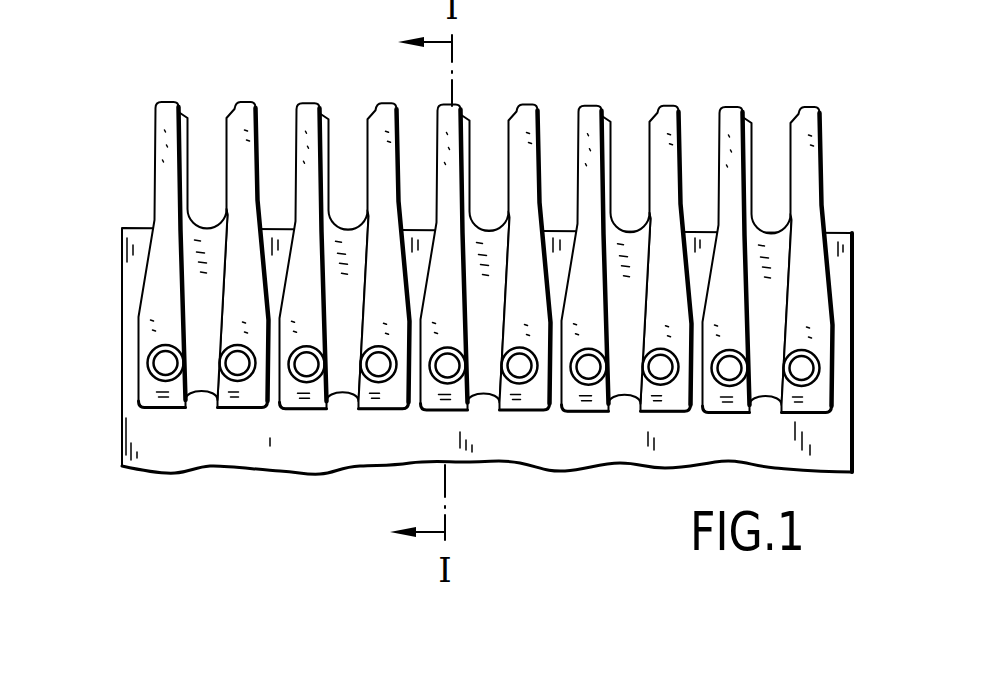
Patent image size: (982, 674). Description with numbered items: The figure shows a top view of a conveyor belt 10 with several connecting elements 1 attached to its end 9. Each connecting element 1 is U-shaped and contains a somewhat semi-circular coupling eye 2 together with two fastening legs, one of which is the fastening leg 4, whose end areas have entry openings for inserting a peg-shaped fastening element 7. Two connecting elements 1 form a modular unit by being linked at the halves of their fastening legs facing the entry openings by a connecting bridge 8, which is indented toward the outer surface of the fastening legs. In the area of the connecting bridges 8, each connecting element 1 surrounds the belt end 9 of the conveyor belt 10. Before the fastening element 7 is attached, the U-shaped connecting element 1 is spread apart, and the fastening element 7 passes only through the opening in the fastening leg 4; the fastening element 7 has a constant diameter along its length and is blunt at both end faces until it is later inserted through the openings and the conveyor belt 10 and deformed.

The contact element (fork terminal) 1 is at (807, 212).
The contact tines (fork legs) 2 is at (160, 104).
The base section of contact element 4 is at (818, 303).
The fastening hole 7 is at (808, 367).
The connecting web 8 is at (197, 282).
The insulating housing 9 is at (524, 308).
The housing base 10 is at (835, 430).